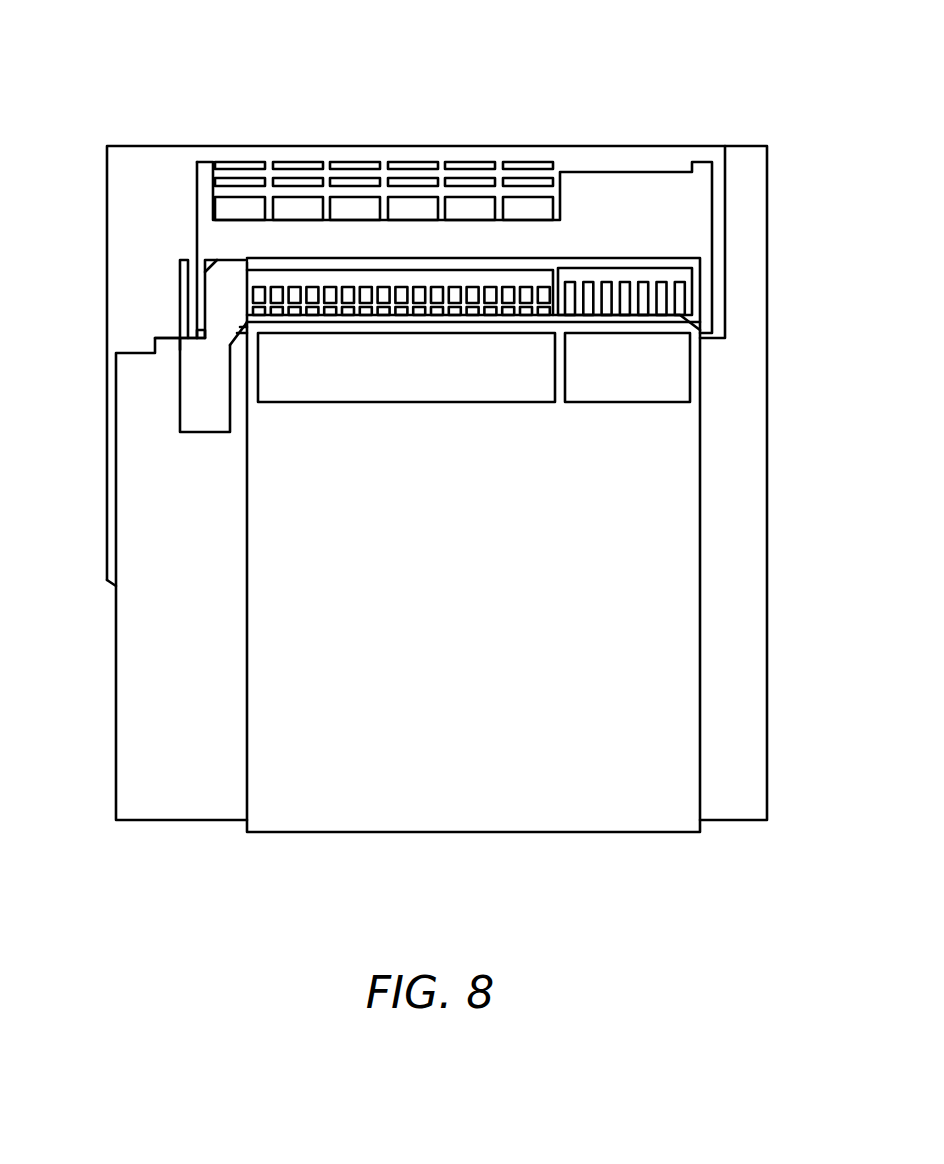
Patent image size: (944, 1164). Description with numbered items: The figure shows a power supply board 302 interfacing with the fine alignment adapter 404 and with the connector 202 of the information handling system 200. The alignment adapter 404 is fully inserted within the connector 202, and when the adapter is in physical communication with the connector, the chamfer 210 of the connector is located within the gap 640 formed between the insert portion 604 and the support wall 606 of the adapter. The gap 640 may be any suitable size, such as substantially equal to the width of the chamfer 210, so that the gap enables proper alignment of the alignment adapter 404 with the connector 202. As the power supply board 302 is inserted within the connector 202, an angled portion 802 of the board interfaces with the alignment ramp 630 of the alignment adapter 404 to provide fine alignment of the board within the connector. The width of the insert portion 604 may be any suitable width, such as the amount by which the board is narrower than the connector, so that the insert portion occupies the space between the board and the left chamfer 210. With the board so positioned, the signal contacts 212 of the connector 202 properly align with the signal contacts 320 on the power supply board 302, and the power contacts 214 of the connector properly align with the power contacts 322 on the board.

The information handling system 200 is at (605, 108).
The connector 202 is at (692, 220).
The chamfer 210 is at (226, 291).
The signal contacts 212 is at (690, 281).
The power contacts 214 is at (265, 268).
The main body 302 is at (345, 650).
The signal contacts 320 is at (627, 367).
The power contacts 322 is at (404, 344).
The alignment adapter 404 is at (203, 413).
The insert portion 604 is at (226, 292).
The support wall 606 is at (195, 328).
The alignment ramp 630 is at (181, 335).
The gap 640 is at (181, 339).
The angled portion 802 is at (238, 338).